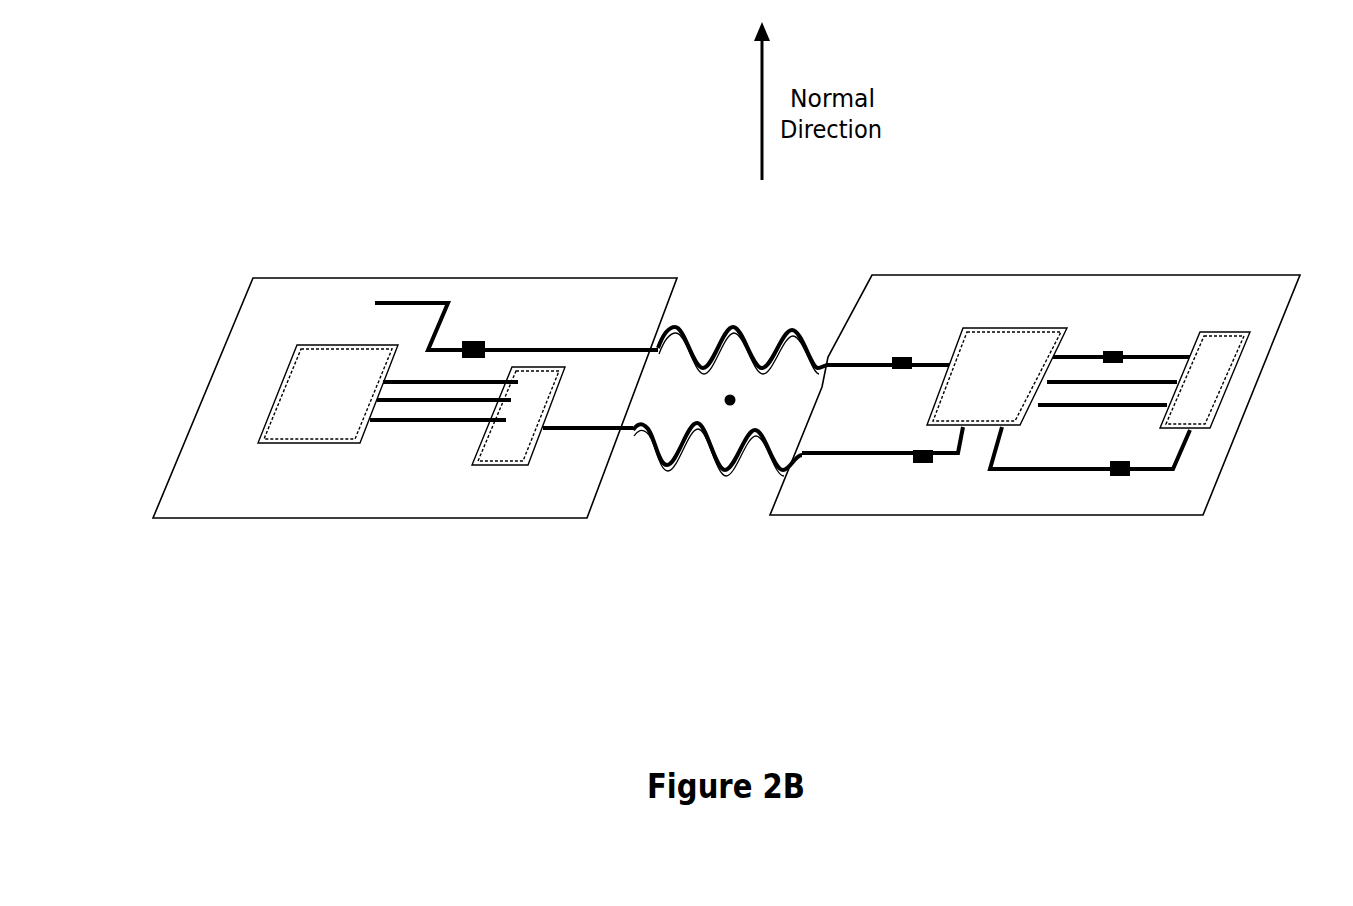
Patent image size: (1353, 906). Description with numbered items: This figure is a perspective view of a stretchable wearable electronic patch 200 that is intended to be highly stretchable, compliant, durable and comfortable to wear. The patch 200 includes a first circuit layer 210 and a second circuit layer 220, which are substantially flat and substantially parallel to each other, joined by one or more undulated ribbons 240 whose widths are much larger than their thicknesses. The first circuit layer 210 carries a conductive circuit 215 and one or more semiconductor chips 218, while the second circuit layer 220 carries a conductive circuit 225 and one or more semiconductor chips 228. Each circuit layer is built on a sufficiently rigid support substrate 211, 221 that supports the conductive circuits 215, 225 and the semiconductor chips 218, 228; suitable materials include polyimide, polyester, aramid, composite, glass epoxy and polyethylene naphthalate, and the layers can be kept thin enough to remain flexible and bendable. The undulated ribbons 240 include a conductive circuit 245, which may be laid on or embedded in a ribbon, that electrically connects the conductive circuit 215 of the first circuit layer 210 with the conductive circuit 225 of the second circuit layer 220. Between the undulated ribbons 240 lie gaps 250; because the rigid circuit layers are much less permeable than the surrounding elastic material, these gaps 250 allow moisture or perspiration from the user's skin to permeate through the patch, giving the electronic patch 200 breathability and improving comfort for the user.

The electronic patch 200 is at (127, 247).
The first circuit layer 210 is at (415, 357).
The support substrate 211 is at (248, 501).
The conductive circuit 215 is at (425, 433).
The semiconductor chips 218 is at (330, 372).
The second circuit layer 220 is at (1035, 356).
The support substrate 221 is at (859, 501).
The conductive circuit 225 is at (1043, 490).
The semiconductor chips 228 is at (1002, 360).
The undulated ribbons 240 is at (734, 308).
The conductive circuit 245 is at (795, 322).
The gaps 250 is at (728, 406).